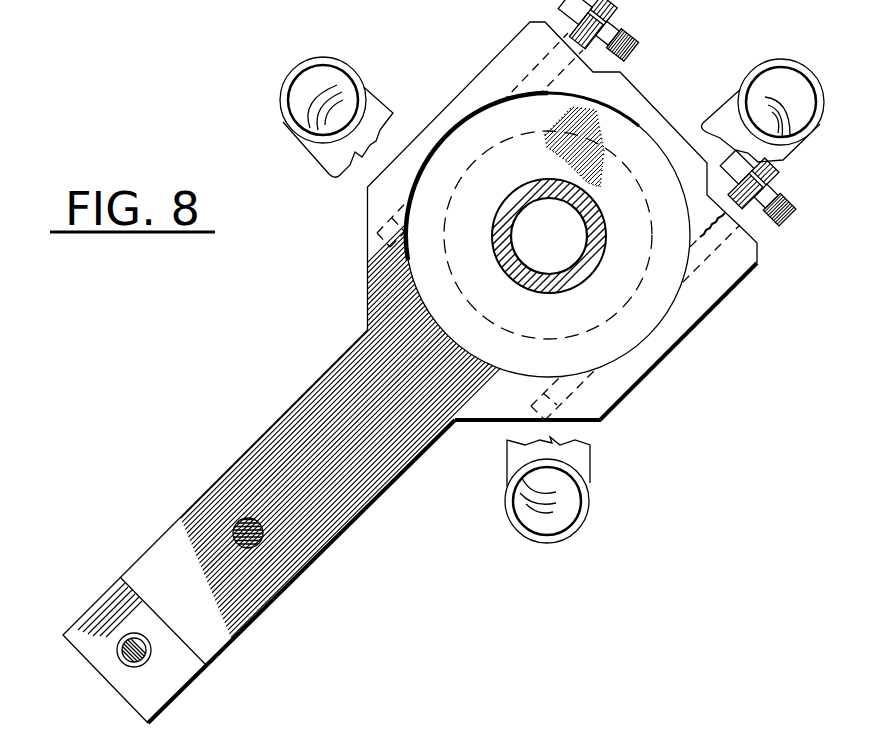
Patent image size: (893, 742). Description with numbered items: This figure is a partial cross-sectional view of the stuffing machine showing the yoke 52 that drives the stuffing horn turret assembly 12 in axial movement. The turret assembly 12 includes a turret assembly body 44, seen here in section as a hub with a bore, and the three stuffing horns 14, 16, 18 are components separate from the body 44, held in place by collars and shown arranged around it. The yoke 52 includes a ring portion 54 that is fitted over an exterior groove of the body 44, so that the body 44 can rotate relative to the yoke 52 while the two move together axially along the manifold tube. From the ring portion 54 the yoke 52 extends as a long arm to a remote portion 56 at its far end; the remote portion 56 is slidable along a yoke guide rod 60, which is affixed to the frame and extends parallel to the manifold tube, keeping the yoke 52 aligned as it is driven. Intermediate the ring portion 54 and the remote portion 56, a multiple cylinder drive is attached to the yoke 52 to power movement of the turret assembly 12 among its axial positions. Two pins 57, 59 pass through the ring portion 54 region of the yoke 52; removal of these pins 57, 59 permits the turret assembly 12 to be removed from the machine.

The stuffing horn turret assembly 12 is at (592, 741).
The stuffing horn 14 is at (342, 67).
The stuffing horn 16 is at (790, 63).
The stuffing horn 18 is at (583, 520).
The turret assembly body 44 is at (632, 262).
The yoke 52 is at (262, 615).
The ring portion 54 is at (645, 375).
The remote portion 56 is at (118, 592).
The pin 57 is at (630, 36).
The pin 59 is at (780, 200).
The yoke guide rod 60 is at (123, 662).